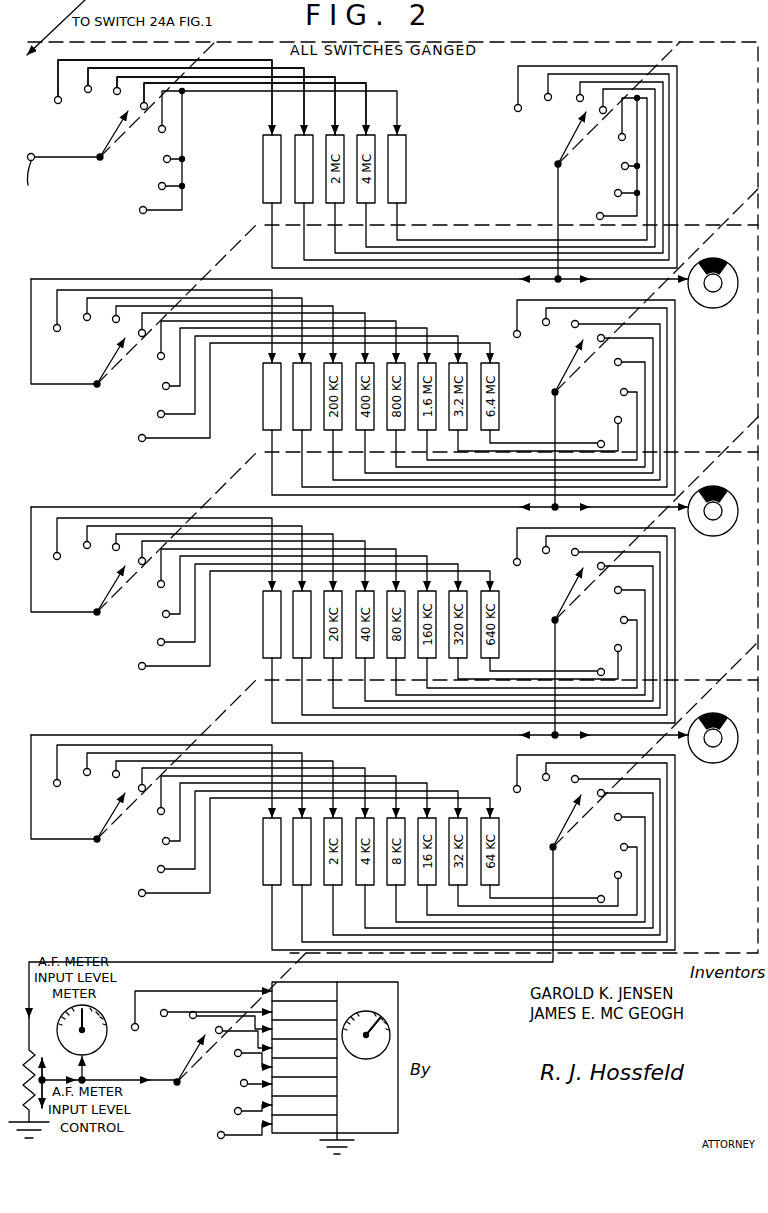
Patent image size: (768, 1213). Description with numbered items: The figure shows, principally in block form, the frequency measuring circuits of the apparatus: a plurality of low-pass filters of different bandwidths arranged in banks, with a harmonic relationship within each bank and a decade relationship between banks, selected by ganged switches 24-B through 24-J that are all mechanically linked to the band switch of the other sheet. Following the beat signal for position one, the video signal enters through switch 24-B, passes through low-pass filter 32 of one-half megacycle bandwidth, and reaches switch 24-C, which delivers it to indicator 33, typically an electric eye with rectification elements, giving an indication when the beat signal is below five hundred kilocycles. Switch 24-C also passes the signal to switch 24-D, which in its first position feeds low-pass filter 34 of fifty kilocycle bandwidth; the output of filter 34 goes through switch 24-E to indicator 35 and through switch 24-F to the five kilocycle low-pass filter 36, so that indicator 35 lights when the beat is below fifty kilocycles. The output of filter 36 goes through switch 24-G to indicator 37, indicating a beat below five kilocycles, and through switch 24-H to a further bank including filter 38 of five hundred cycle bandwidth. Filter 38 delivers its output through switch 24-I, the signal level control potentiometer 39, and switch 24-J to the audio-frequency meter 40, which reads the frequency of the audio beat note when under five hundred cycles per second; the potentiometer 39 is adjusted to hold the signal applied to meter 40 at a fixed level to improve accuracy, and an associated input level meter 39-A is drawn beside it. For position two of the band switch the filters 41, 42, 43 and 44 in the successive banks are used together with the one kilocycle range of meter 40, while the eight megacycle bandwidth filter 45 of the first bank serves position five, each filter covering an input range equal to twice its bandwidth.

The switch 24-B is at (106, 146).
The switch 24-C is at (558, 151).
The switch 24-D is at (104, 373).
The switch 24-E is at (555, 379).
The switch 24-F is at (104, 601).
The switch 24-G is at (555, 607).
The switch 24-H is at (104, 828).
The switch 24-I is at (553, 834).
The switch 24-J is at (184, 1071).
The low-pass filter 32 is at (262, 163).
The indicator 33 is at (733, 267).
The low-pass filter 34 is at (262, 391).
The indicator 35 is at (733, 495).
The low-pass filter 36 is at (262, 619).
The indicator 37 is at (733, 722).
The filter 38 is at (262, 846).
The signal level control potentiometer 39 is at (26, 1067).
The A.F. meter input level meter 39-A is at (103, 1040).
The audio-frequency meter 40 is at (398, 1013).
The filter 41 is at (295, 199).
The filter 42 is at (295, 427).
The filter 43 is at (295, 655).
The filter 44 is at (295, 882).
The filter 45 is at (407, 163).